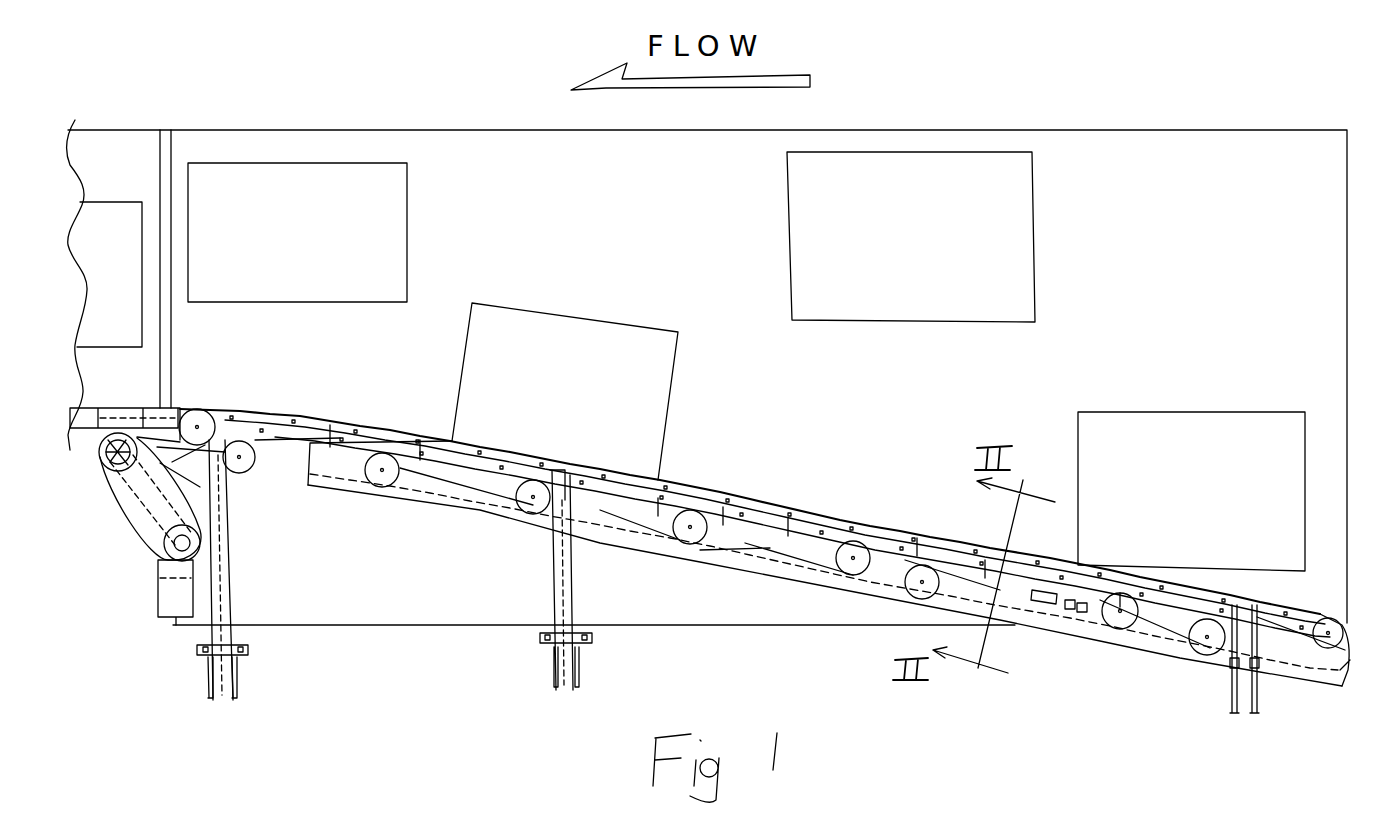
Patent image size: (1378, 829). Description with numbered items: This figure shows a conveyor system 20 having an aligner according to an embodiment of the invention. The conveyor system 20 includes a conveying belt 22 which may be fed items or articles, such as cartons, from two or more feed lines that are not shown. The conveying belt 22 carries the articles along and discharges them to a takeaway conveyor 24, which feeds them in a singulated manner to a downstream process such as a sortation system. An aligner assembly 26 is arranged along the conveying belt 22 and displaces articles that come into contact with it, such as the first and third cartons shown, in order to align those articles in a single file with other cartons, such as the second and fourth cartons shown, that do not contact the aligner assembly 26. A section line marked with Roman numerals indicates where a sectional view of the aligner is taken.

The conveyor system 20 is at (1138, 118).
The conveying belt 22 is at (1215, 130).
The takeaway conveyor 24 is at (118, 133).
The aligner assembly 26 is at (873, 527).